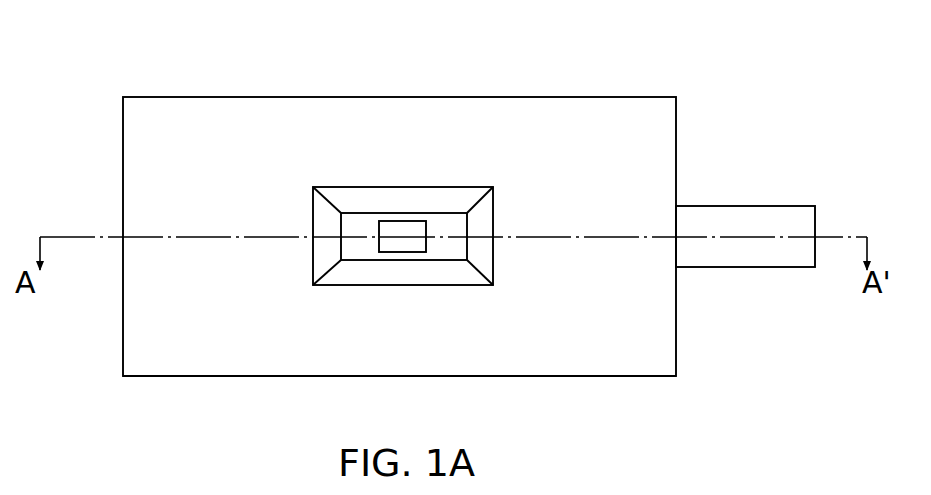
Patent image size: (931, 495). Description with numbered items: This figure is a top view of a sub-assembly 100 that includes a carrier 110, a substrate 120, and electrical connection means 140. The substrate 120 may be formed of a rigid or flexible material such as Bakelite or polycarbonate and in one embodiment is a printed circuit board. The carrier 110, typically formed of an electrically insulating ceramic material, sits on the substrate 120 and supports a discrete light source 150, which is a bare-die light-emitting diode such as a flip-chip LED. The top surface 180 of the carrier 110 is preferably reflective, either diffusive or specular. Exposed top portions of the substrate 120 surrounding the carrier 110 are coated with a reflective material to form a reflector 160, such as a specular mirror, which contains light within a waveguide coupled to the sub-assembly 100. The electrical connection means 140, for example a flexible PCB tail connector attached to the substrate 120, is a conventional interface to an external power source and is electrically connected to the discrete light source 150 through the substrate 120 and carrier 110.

The sub-assembly 100 is at (203, 50).
The carrier 110 is at (366, 222).
The substrate 120 is at (664, 351).
The electrical connection means 140 is at (763, 218).
The discrete light source 150 is at (405, 221).
The reflector 160 is at (574, 363).
The top surface 180 is at (368, 250).